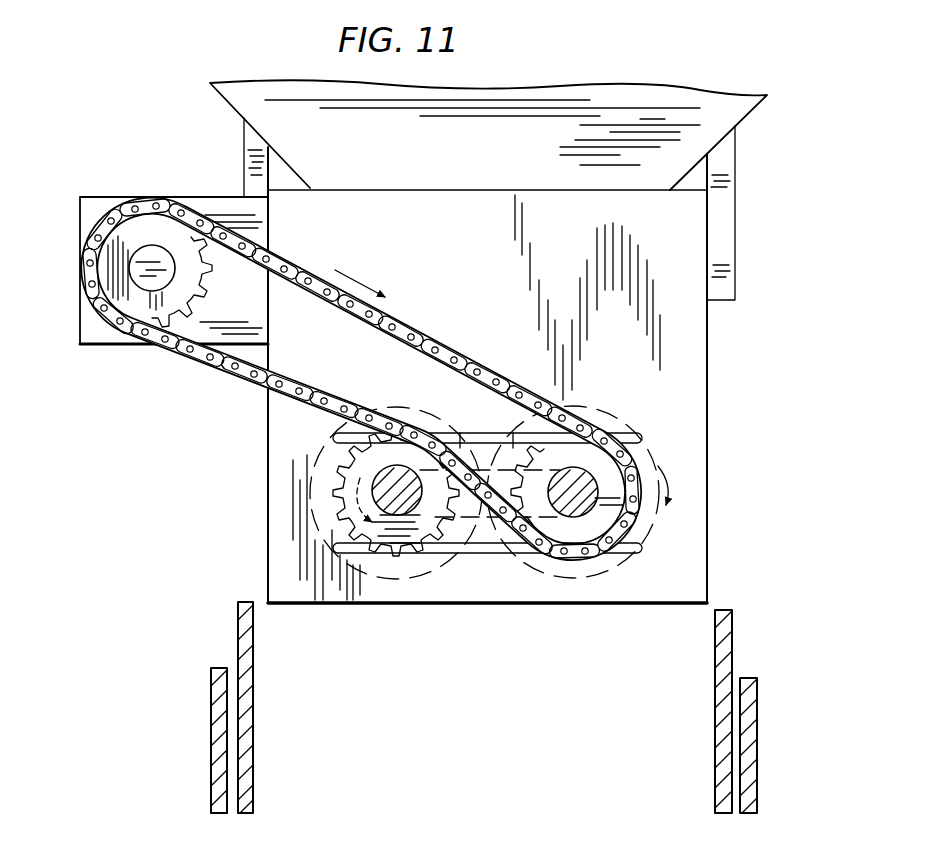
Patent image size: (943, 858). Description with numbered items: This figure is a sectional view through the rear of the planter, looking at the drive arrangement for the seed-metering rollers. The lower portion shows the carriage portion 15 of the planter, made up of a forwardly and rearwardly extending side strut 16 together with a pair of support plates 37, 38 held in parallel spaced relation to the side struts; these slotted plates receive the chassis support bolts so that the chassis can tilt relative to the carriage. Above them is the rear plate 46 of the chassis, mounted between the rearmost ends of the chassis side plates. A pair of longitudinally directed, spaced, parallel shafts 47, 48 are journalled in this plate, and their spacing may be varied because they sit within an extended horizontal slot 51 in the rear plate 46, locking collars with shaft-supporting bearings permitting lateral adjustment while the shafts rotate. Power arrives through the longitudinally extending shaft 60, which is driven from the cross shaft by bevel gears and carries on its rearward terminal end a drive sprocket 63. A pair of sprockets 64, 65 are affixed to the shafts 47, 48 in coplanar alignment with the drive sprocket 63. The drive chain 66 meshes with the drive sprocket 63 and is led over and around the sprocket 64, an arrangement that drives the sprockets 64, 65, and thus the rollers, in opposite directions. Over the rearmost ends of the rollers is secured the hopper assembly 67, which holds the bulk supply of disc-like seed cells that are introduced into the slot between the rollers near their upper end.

The carriage portion 15 is at (176, 735).
The side strut 16 is at (213, 747).
The support plate 37 is at (240, 632).
The support plate 38 is at (725, 640).
The rear plate 46 is at (690, 409).
The shaft 47 is at (402, 507).
The shaft 48 is at (577, 520).
The extended horizontal slot 51 is at (500, 470).
The longitudinally extending shaft 60 is at (147, 281).
The drive sprocket 63 is at (153, 234).
The sprocket 64 is at (365, 547).
The sprocket 65 is at (540, 522).
The drive chain 66 is at (437, 348).
The hopper assembly 67 is at (675, 114).